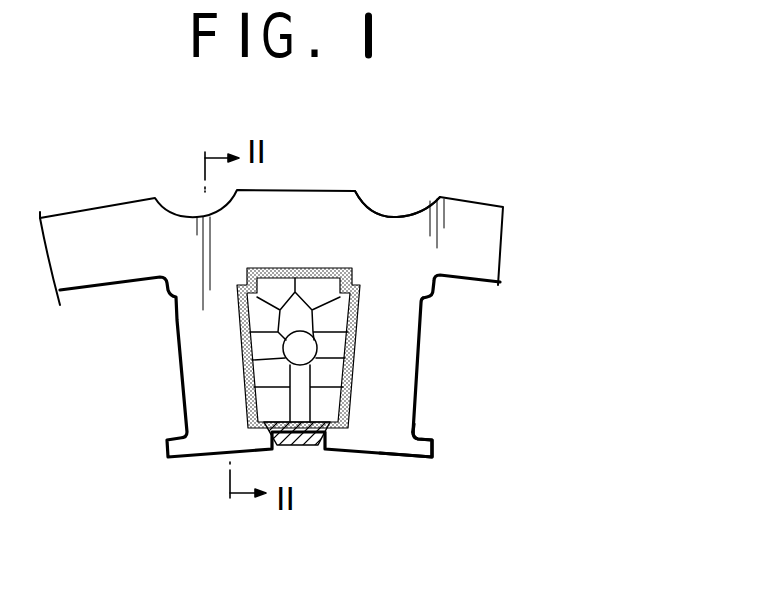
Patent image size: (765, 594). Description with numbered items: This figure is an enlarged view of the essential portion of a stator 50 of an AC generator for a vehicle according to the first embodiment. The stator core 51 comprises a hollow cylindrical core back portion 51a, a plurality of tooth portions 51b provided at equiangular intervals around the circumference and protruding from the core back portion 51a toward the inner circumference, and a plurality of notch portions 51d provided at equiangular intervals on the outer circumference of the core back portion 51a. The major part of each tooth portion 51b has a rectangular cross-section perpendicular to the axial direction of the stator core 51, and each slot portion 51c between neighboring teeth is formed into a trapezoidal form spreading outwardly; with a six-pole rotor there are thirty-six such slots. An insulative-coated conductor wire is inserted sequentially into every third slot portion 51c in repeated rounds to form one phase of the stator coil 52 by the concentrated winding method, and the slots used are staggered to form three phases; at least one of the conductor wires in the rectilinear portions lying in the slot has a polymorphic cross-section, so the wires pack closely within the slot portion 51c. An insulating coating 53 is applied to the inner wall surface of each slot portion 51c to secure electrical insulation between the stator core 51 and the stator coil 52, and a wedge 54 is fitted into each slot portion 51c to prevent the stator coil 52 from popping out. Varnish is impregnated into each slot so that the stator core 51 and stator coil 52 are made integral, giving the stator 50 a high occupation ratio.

The stator 50 is at (579, 168).
The stator core 51 is at (575, 247).
The core back portion 51a is at (480, 263).
The tooth portion 51b is at (402, 323).
The slot portion 51c is at (437, 382).
The notch portion 51d is at (403, 202).
The stator coil 52 is at (262, 352).
The insulating coating 53 is at (247, 407).
The wedge 54 is at (300, 440).